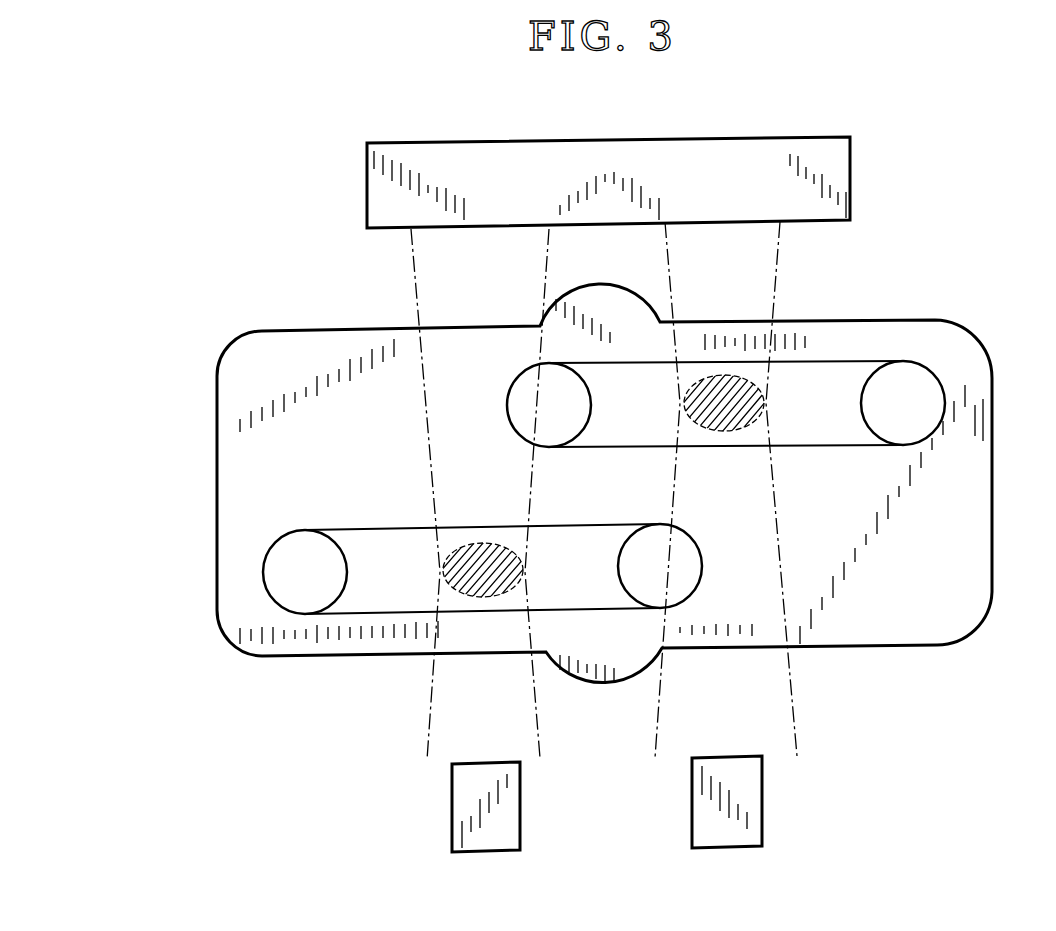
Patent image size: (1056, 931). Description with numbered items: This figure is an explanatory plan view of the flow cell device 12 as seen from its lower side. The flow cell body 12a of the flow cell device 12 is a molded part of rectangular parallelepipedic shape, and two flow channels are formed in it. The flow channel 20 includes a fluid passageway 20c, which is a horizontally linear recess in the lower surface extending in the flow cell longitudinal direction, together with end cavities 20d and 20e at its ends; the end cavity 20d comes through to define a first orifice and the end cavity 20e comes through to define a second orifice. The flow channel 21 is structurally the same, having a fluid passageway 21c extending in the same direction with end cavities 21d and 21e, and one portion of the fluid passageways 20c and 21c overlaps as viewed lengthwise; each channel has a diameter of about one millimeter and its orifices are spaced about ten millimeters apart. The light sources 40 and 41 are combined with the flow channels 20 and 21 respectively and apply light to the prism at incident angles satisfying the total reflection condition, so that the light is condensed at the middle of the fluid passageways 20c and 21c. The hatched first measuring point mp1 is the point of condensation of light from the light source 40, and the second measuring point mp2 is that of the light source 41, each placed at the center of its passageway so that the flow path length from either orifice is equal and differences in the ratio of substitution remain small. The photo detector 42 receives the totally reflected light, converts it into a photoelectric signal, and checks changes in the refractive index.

The flow cell device 12 is at (243, 331).
The flow cell body 12a is at (235, 418).
The flow channel 20 is at (370, 515).
The fluid passageway 20c is at (384, 614).
The end cavity 20d is at (270, 560).
The end cavity 20e is at (646, 530).
The flow channel 21 is at (829, 346).
The fluid passageway 21c is at (832, 445).
The end cavity 21d is at (520, 392).
The end cavity 21e is at (930, 404).
The first measuring point mp1 is at (483, 544).
The second measuring point mp2 is at (726, 432).
The light source 40 is at (452, 806).
The light source 41 is at (762, 801).
The photo detector 42 is at (852, 171).